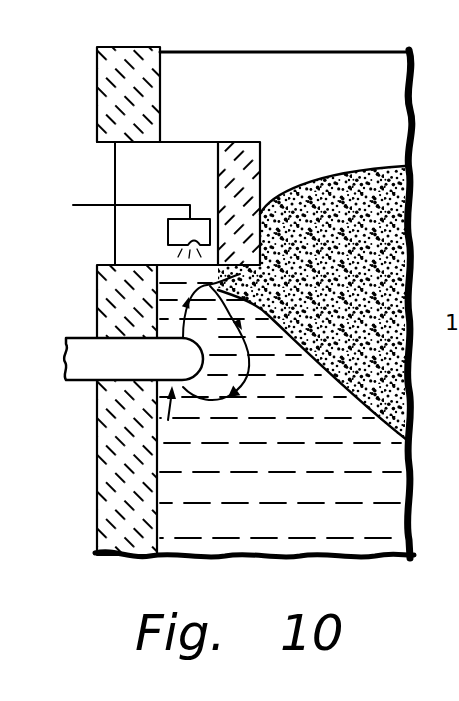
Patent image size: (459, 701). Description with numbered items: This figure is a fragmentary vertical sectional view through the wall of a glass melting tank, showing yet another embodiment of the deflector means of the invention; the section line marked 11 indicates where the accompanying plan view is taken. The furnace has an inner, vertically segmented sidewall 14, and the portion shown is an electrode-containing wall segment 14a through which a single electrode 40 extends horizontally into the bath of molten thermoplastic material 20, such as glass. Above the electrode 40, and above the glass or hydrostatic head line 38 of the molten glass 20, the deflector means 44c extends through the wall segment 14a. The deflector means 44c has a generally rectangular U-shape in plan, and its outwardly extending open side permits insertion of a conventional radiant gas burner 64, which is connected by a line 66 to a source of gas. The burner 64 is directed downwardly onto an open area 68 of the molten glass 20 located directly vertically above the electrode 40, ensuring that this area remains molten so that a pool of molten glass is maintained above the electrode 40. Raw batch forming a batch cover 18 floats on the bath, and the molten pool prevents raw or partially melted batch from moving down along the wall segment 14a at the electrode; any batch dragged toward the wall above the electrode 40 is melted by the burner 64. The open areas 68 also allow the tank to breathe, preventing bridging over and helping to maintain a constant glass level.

The sidewall 14 is at (366, 99).
The electrode-containing wall segment 14a is at (100, 492).
The deflector means 44c is at (232, 142).
The radiant gas burner 64 is at (199, 228).
The line 66 is at (90, 207).
The batch cover 18 is at (346, 255).
The open area 68 is at (294, 356).
The glass line 38 is at (160, 273).
The electrode 40 is at (78, 368).
The molten thermoplastic material 20 is at (300, 507).
The section line 11 is at (45, 140).